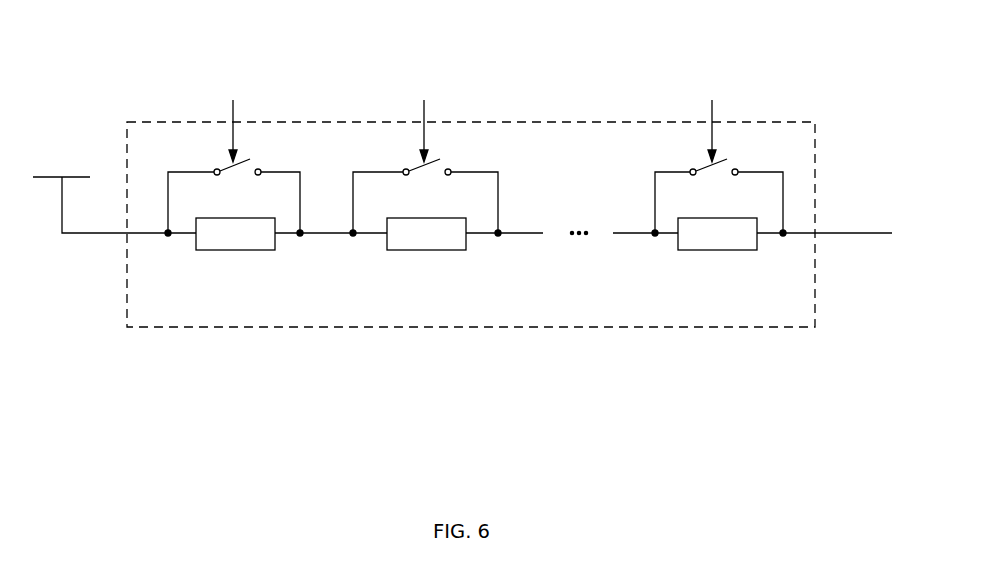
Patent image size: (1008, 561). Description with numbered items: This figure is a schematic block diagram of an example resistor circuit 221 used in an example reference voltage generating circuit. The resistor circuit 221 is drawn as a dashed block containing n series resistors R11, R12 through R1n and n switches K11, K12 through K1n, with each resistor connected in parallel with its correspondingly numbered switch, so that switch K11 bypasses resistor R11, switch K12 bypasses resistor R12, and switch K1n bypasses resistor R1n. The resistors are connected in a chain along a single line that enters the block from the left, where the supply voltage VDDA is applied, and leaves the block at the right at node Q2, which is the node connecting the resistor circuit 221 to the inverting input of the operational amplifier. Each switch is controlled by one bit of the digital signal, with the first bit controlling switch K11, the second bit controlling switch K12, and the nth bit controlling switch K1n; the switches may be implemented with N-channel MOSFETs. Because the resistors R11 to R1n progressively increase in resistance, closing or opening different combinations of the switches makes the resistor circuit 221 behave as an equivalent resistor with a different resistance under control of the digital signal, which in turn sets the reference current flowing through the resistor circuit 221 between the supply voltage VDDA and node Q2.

The resistor circuit 221 is at (784, 122).
The supply voltage VDDA is at (99, 190).
The node Q2 is at (837, 213).
The switch K11 is at (234, 197).
The switch K12 is at (425, 197).
The switch K1n is at (719, 197).
The resistor R11 is at (234, 251).
The resistor R12 is at (425, 251).
The resistor R1n is at (719, 251).